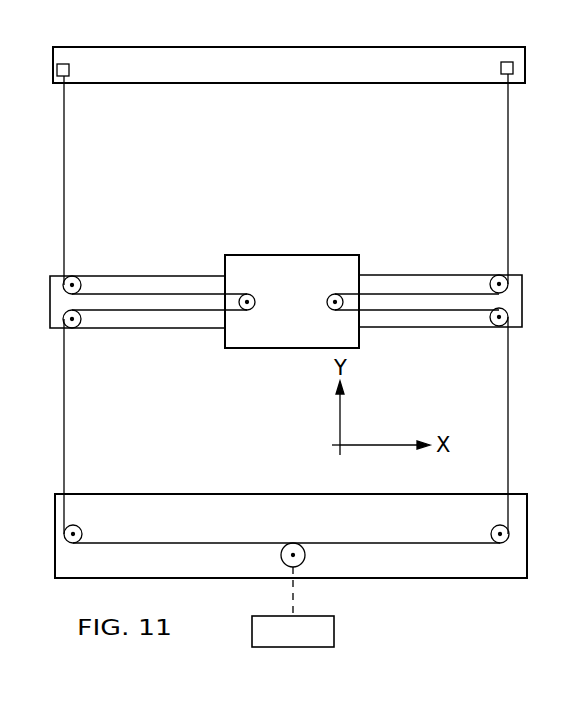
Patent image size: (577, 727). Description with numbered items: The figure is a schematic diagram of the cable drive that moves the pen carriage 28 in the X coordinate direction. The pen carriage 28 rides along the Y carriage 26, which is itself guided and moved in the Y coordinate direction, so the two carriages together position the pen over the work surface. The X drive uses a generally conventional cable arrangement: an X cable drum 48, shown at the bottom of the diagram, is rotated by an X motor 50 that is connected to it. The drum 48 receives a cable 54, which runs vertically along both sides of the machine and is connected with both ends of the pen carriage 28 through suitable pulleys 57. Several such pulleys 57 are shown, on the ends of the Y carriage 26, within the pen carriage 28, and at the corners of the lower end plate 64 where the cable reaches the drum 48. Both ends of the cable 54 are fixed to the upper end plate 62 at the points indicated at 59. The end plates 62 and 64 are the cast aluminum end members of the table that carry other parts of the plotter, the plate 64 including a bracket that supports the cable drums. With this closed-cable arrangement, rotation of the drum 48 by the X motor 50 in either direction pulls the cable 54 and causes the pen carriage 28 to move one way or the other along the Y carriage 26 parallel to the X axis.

The Y carriage 26 is at (158, 276).
The pen carriage 28 is at (302, 255).
The X cable drum 48 is at (296, 543).
The X motor 50 is at (326, 626).
The cable 54 is at (508, 398).
The pulleys 57 is at (80, 312).
The cable fixing points 59 is at (69, 70).
The end plate 62 is at (358, 46).
The end plate 64 is at (445, 567).